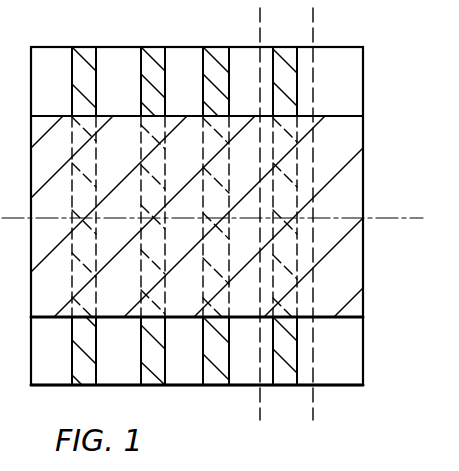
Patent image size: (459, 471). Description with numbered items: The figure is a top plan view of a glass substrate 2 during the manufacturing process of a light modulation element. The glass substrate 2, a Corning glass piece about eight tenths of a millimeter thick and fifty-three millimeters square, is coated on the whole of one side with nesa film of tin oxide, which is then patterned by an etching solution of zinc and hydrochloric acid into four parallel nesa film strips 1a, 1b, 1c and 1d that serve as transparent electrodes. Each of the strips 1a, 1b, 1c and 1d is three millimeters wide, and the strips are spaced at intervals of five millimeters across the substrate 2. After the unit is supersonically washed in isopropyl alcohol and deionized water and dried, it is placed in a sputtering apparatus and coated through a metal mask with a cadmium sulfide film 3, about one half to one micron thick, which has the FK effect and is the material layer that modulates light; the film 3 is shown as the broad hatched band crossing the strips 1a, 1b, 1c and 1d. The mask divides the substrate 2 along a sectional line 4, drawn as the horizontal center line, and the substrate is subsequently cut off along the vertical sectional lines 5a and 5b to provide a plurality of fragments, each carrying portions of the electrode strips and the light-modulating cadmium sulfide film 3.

The nesa film strip 1a is at (96, 362).
The nesa film strip 1b is at (165, 371).
The nesa film strip 1c is at (229, 372).
The nesa film strip 1d is at (297, 376).
The glass substrate 2 is at (363, 352).
The cadmium sulfide film 3 is at (350, 135).
The sectional line 4 is at (379, 221).
The sectional line 5a is at (260, 33).
The sectional line 5b is at (313, 27).